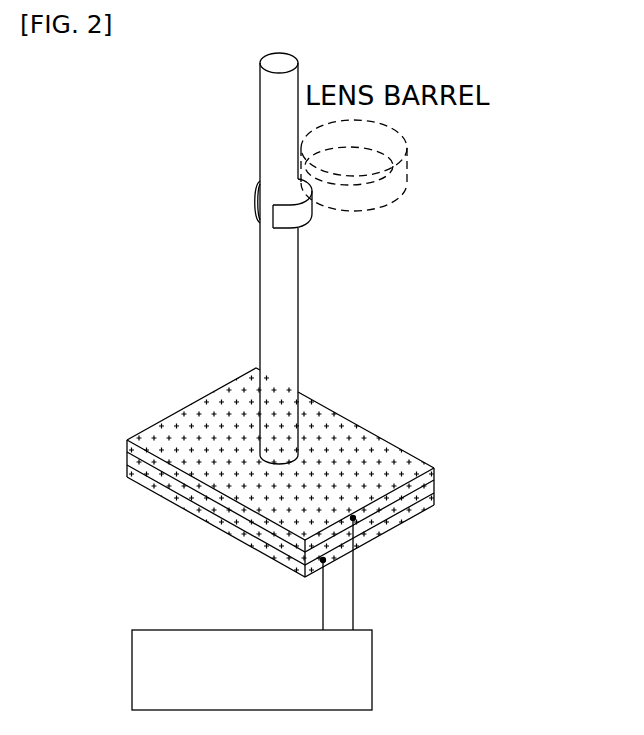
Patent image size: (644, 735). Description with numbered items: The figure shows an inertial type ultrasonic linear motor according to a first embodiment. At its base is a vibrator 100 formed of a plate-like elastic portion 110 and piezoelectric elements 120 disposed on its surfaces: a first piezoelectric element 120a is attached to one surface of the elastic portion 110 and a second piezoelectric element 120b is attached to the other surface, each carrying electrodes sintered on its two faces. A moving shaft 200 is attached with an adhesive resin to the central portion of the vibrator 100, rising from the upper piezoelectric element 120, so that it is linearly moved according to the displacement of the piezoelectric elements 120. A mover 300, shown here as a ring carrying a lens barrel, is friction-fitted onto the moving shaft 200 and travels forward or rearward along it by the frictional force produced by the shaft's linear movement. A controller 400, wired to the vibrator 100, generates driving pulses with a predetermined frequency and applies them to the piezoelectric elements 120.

The vibrator 100 is at (327, 476).
The elastic portion 110 is at (127, 460).
The piezoelectric elements 120 is at (370, 518).
The first piezoelectric element 120a is at (418, 484).
The second piezoelectric element 120b is at (397, 518).
The moving shaft 200 is at (287, 318).
The mover 300 is at (253, 205).
The controller 400 is at (372, 668).